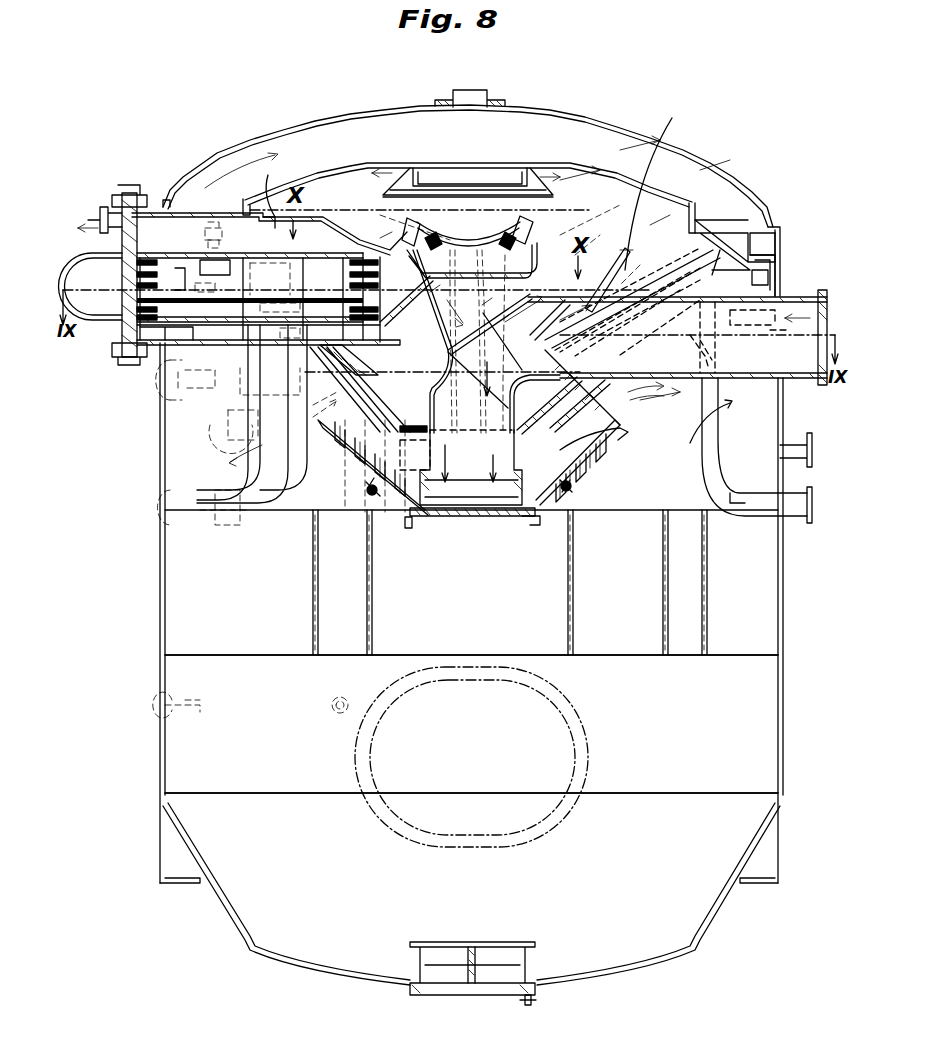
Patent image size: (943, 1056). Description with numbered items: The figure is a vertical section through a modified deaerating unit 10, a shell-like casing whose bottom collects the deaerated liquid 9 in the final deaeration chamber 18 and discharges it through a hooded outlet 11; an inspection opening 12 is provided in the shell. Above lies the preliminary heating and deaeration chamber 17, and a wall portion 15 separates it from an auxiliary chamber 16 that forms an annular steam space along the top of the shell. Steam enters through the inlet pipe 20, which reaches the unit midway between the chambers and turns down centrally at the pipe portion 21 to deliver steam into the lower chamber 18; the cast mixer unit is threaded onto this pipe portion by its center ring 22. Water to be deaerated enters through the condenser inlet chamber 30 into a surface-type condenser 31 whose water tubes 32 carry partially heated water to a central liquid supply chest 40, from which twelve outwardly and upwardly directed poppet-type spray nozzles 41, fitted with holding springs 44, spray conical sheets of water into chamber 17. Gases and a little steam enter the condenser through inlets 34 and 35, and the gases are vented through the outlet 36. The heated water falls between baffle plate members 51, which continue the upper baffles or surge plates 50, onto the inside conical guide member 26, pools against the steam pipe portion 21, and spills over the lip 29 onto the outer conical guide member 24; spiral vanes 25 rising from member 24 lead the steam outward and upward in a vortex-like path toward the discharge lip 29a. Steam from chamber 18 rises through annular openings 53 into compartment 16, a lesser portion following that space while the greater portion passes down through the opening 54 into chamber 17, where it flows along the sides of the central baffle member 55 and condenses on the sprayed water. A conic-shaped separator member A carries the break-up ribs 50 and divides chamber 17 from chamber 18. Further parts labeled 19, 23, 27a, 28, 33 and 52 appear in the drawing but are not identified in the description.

The deaerated liquid 9 is at (765, 825).
The deaerating apparatus 10 is at (684, 727).
The hooded outlet 11 is at (418, 965).
The inspection opening 12 is at (565, 696).
The wall portion 15 is at (690, 233).
The auxiliary or supplementary chamber 16 is at (642, 161).
The upper or preliminary heating and deaeration chamber 17 is at (612, 204).
The lower or final deaeration chamber 18 is at (673, 472).
The support pipes 19 is at (573, 563).
The steam inlet pipe 20 is at (798, 297).
The downturned steam pipe portion 21 is at (486, 366).
The center ring 22 is at (441, 484).
The bottom flange 23 is at (488, 517).
The outer conical guide member 24 is at (572, 488).
The spiral-like vanes 25 is at (557, 466).
The inside conical-face guide member 26 is at (621, 425).
The pivot 27a is at (365, 490).
The bracket 28 is at (542, 518).
The annular edge or lip portion 29 is at (398, 470).
The discharge end or lip 29a is at (617, 445).
The condenser inlet chamber 30 is at (110, 300).
The condenser 31 is at (247, 283).
The water tubes 32 is at (187, 280).
The end cap 33 is at (121, 256).
The condenser inlet 34 is at (291, 425).
The condenser inlet 35 is at (274, 196).
The vent outlet 36 is at (107, 213).
The liquid supply chest 40 is at (537, 268).
The spray nozzles 41 is at (417, 225).
The holding springs 44 is at (490, 252).
The upper baffles or surge plates 50 is at (655, 274).
The baffle plate members 51 is at (557, 380).
The guide vanes 52 is at (690, 350).
The annular openings 53 is at (772, 230).
The opening 54 is at (650, 264).
The central baffle member 55 is at (457, 186).
The conic-shaped separator member A is at (653, 181).